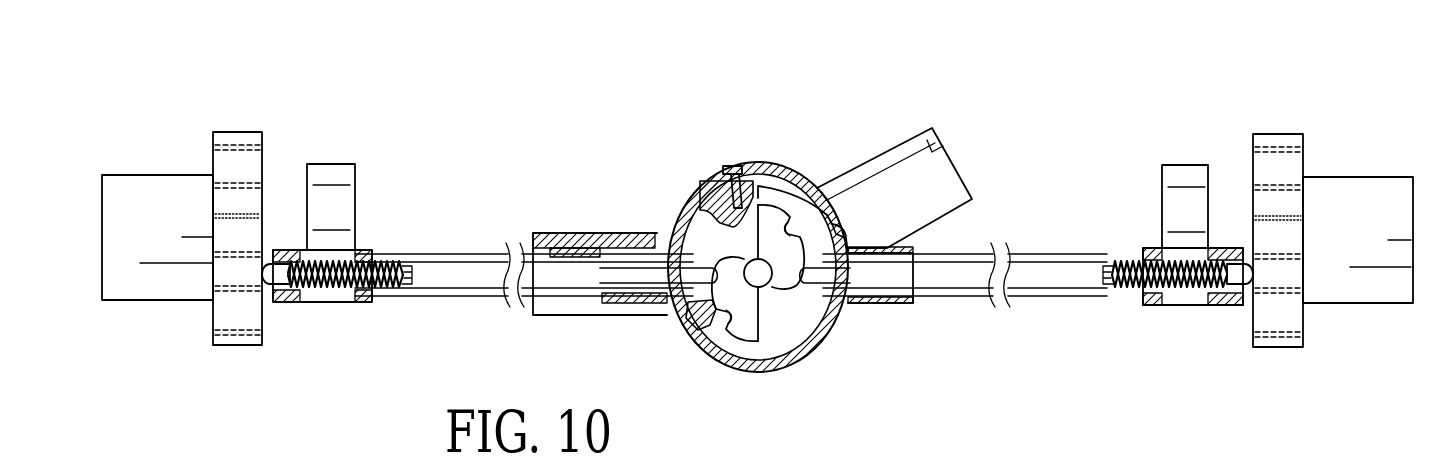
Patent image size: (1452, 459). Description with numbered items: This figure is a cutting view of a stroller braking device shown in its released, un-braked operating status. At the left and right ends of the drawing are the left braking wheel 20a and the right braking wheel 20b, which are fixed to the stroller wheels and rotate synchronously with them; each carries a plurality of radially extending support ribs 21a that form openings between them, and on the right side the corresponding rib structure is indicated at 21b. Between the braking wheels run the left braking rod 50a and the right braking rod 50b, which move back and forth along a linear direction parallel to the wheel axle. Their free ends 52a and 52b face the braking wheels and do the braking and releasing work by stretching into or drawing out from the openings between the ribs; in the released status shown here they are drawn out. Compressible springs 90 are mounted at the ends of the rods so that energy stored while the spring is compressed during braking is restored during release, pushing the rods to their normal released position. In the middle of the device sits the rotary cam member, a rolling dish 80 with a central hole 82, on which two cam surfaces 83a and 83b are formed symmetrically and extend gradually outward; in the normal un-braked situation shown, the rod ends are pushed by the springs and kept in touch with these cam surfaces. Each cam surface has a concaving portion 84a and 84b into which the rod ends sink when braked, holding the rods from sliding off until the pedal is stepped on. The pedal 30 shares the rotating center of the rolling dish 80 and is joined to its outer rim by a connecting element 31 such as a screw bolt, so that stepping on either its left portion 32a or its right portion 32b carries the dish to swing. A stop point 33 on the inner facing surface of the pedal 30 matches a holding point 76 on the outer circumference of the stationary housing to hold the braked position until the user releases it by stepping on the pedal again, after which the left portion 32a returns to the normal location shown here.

The left braking wheel 20a is at (242, 130).
The support ribs 21a is at (234, 346).
The free end of left braking rod 52a is at (290, 285).
The compressible spring 90 is at (332, 287).
The left braking rod 50a is at (488, 273).
The left portion of pedal 32a is at (590, 232).
The pedal 30 is at (666, 193).
The connecting element 31 is at (731, 165).
The cam surface 83b is at (798, 203).
The stop point 33 is at (824, 190).
The right portion of pedal 32b is at (905, 125).
The concaving portion 84b is at (808, 228).
The holding point 76 is at (853, 229).
The rolling dish 80 is at (838, 344).
The hole 82 is at (760, 284).
The concaving portion 84a is at (716, 326).
The cam surface 83a is at (696, 312).
The right braking rod 50b is at (1047, 275).
The free end of right braking rod 52b is at (1238, 283).
The right braking wheel 20b is at (1277, 130).
The second motor 21b is at (1274, 347).